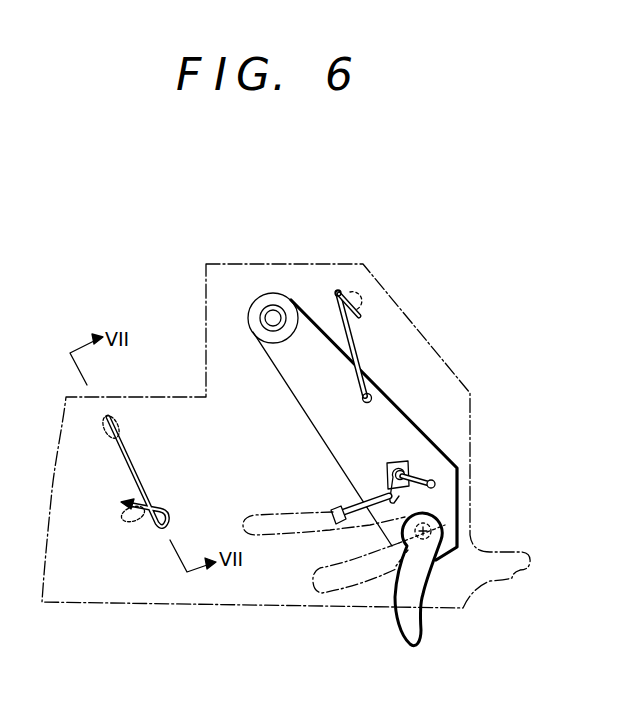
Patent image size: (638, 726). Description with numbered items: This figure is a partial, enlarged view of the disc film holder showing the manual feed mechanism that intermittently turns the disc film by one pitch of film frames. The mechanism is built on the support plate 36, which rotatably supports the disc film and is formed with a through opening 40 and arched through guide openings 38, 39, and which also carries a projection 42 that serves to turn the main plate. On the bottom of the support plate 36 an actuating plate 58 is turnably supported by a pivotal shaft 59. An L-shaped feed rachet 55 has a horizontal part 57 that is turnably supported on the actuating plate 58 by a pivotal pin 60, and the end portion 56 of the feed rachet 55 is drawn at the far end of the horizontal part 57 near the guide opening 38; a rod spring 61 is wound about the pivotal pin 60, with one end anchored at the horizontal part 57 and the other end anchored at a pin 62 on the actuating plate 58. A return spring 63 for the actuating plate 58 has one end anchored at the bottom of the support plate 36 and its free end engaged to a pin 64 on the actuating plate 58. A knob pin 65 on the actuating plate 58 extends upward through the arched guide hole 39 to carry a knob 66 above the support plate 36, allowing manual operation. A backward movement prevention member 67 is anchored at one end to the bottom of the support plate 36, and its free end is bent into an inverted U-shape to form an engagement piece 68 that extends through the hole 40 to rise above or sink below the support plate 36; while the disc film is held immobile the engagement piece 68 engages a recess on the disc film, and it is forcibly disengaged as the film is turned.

The support plate 36 is at (243, 262).
The arched through guide opening 38 is at (276, 531).
The arched through guide opening 39 is at (345, 583).
The through opening 40 is at (123, 436).
The projection 42 is at (513, 566).
The L-shaped feed rachet 55 is at (371, 516).
The stop block 56 is at (334, 526).
The horizontal part 57 is at (339, 507).
The actuating plate 58 is at (298, 383).
The pivotal shaft 59 is at (280, 311).
The pivotal pin 60 is at (394, 463).
The rod spring 61 is at (417, 478).
The pin 62 is at (436, 482).
The return spring 63 is at (346, 333).
The pin 64 is at (369, 393).
The knob pin 65 is at (432, 527).
The knob 66 is at (402, 625).
The backward movement prevention member 67 is at (132, 470).
The engagement piece 68 is at (118, 418).